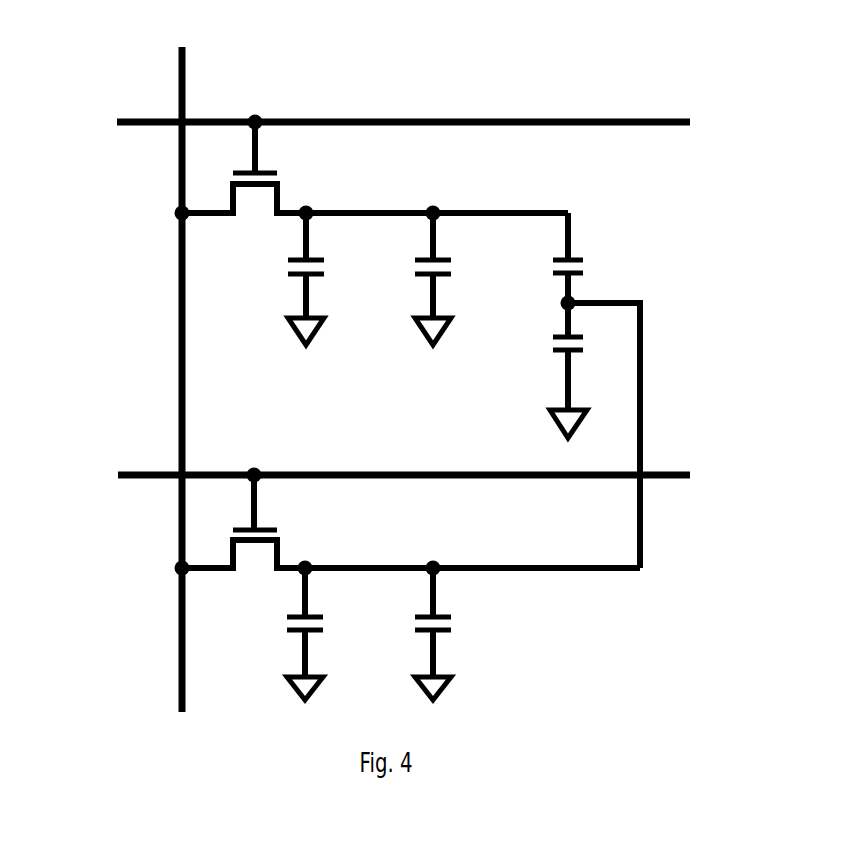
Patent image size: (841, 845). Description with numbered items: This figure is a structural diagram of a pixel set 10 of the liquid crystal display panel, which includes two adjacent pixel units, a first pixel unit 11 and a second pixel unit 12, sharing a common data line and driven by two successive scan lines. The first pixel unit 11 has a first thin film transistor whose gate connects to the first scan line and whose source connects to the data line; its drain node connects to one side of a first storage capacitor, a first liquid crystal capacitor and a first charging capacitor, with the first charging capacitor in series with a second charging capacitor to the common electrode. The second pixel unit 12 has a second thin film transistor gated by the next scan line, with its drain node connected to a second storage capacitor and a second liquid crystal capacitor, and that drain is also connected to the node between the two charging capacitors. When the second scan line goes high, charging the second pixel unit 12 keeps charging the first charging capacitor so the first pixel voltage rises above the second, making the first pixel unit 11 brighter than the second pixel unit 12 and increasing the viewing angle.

The pixel set 10 is at (80, 70).
The first pixel unit 11 is at (640, 290).
The second pixel unit 12 is at (658, 553).